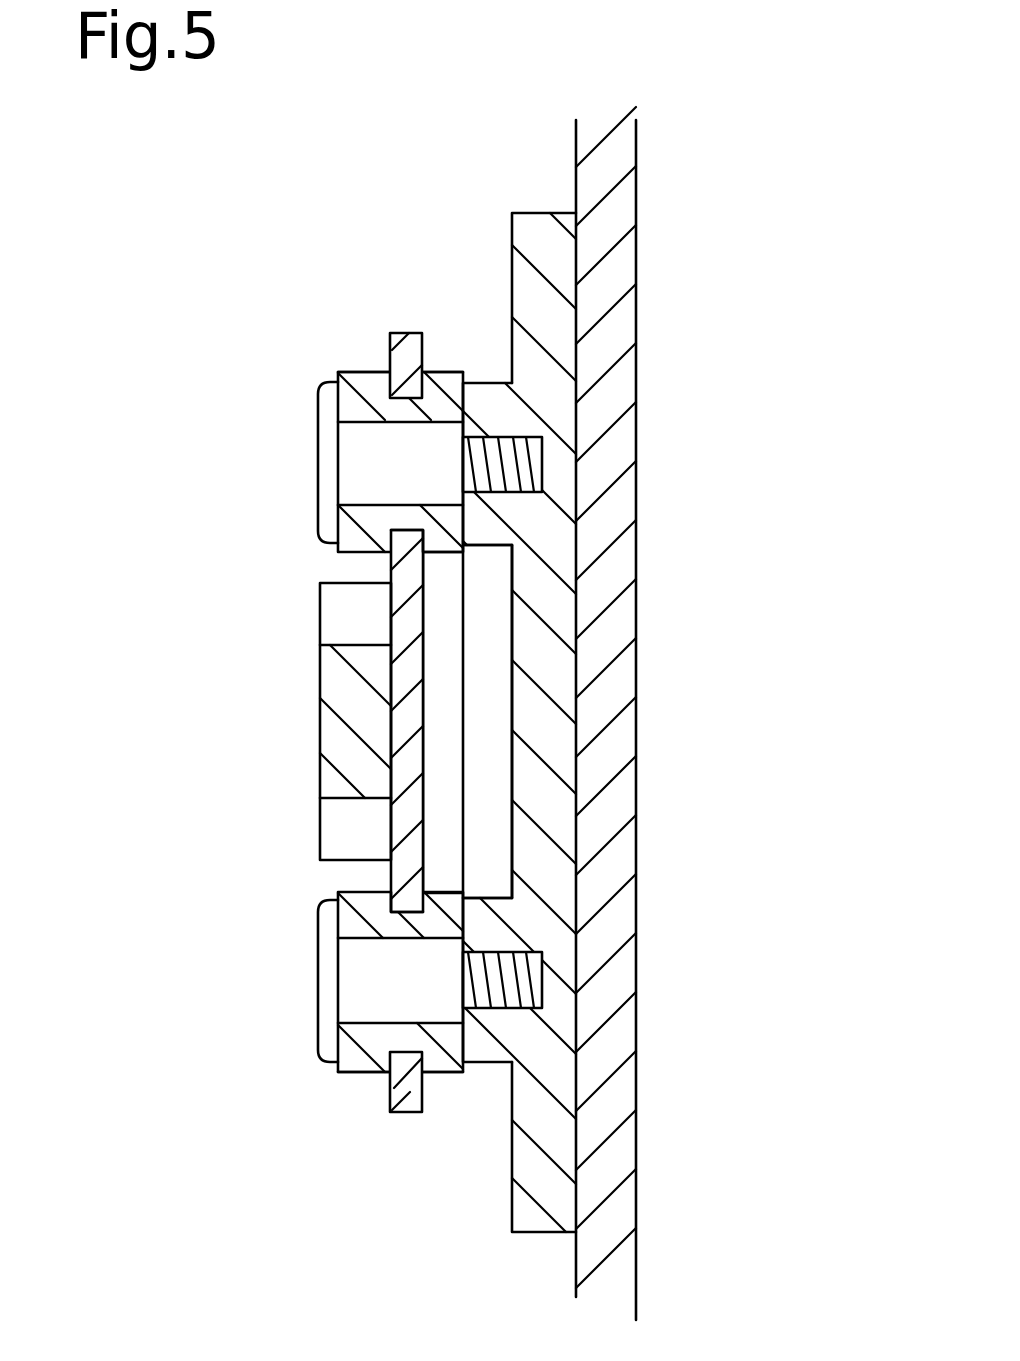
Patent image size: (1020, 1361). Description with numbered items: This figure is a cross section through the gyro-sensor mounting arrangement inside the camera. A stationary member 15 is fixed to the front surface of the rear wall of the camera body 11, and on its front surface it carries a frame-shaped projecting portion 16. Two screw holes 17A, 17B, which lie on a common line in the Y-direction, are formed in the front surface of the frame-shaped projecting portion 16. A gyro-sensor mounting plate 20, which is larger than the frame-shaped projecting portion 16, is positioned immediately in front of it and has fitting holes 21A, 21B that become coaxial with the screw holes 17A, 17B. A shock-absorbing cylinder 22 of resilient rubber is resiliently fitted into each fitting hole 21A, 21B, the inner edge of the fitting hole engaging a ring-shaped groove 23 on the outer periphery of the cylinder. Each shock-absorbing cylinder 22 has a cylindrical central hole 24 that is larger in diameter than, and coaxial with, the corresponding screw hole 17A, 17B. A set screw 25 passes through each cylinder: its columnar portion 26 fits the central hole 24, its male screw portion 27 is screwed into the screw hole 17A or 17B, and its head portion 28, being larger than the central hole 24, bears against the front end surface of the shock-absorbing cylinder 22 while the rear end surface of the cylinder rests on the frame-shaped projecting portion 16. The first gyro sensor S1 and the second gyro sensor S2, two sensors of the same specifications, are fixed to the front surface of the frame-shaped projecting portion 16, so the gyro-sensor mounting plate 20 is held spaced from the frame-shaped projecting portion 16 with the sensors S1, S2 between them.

The camera body 11 is at (610, 160).
The stationary member 15 is at (522, 230).
The frame-shaped projecting portion 16 is at (496, 382).
The screw hole 17A is at (532, 438).
The screw hole 17B is at (510, 969).
The gyro-sensor mounting plate 20 is at (410, 340).
The fitting hole 21A is at (402, 530).
The fitting hole 21B is at (397, 1042).
The shock-absorbing cylinder 22 is at (371, 372).
The ring-shaped groove 23 is at (403, 385).
The central hole 24 is at (345, 425).
The set screw 25 is at (233, 703).
The columnar portion 26 is at (353, 457).
The male screw portion 27 is at (507, 473).
The head portion 28 is at (325, 397).
The first gyro sensor S1 is at (347, 732).
The second gyro sensor S2 is at (345, 612).